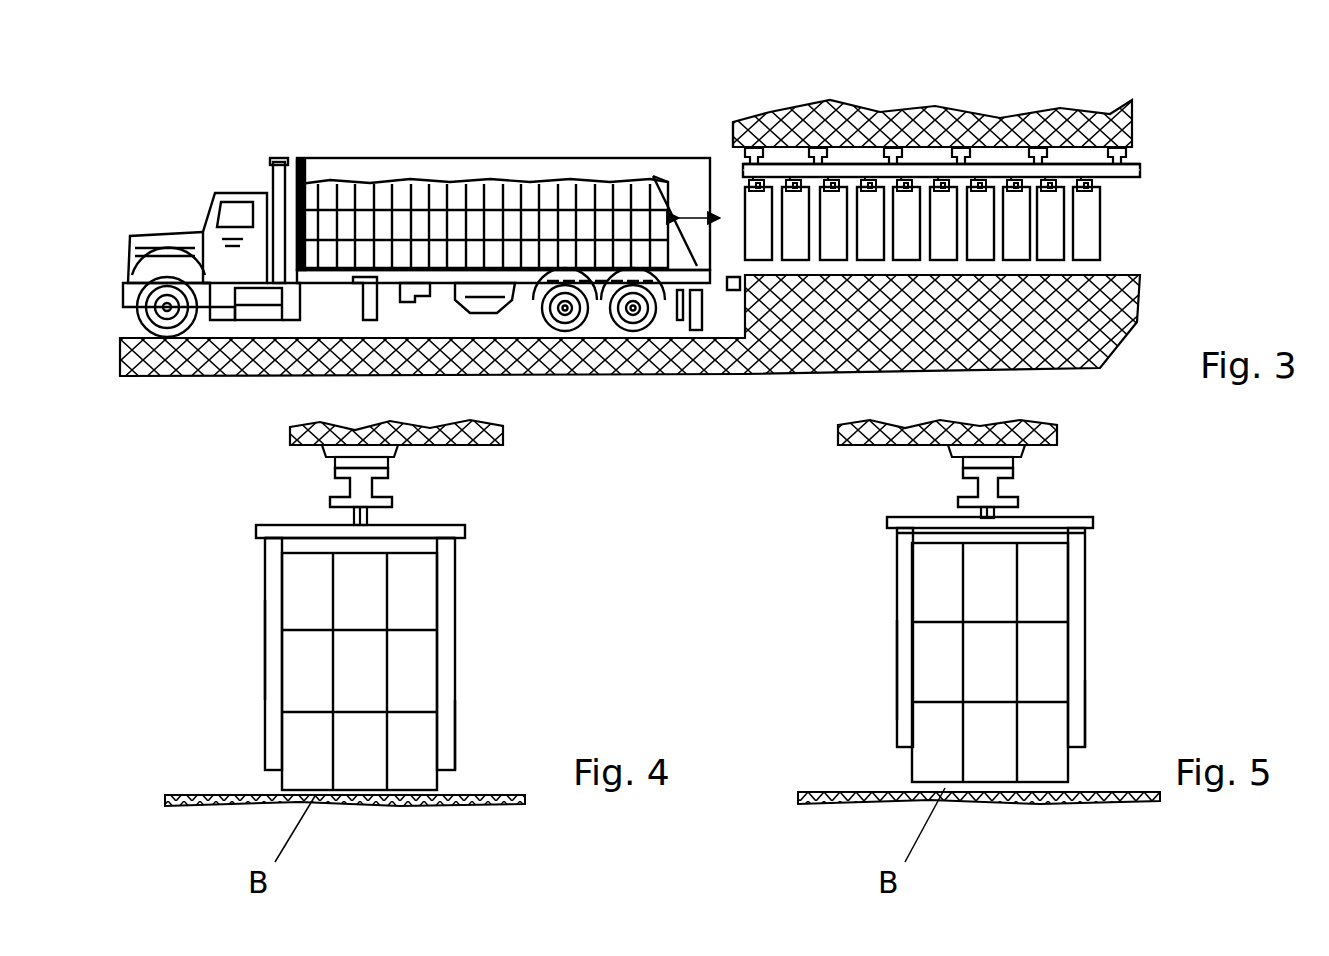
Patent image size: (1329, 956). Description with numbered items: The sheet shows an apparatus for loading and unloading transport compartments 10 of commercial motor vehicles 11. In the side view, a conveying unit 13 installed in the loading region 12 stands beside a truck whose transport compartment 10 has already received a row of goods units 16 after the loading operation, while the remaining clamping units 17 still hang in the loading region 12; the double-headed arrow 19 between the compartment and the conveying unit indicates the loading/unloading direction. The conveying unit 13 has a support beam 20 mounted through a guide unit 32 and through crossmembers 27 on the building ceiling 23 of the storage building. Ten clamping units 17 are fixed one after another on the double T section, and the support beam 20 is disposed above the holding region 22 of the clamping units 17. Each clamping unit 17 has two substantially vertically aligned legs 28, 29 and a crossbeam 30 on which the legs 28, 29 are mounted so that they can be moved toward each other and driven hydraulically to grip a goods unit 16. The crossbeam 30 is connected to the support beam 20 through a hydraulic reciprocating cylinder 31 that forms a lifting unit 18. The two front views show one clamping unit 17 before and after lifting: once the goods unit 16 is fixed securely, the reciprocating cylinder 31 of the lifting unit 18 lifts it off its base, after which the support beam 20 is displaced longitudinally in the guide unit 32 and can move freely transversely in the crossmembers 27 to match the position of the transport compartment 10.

In FIG. 3, the transport compartment 10 is at (415, 170).
In FIG. 3, the commercial motor vehicle 11 is at (262, 182).
In FIG. 3, the loading region 12 is at (1130, 266).
In FIG. 4, the loading region 12 is at (520, 782).
In FIG. 5, the loading region 12 is at (1135, 777).
In FIG. 3, the conveying unit 13 is at (1068, 158).
In FIG. 4, the conveying unit 13 is at (470, 555).
In FIG. 5, the conveying unit 13 is at (1093, 538).
In FIG. 3, the goods unit 16 is at (535, 195).
In FIG. 4, the goods unit 16 is at (410, 668).
In FIG. 5, the goods unit 16 is at (1040, 658).
In FIG. 3, the clamping unit 17 is at (738, 196).
In FIG. 4, the clamping unit 17 is at (458, 582).
In FIG. 5, the clamping unit 17 is at (1088, 560).
In FIG. 3, the lifting unit 18 is at (837, 175).
In FIG. 4, the lifting unit 18 is at (372, 517).
In FIG. 5, the lifting unit 18 is at (1002, 520).
In FIG. 3, the end wall 19 is at (697, 262).
In FIG. 3, the support beam 20 is at (1087, 168).
In FIG. 4, the support beam 20 is at (360, 490).
In FIG. 5, the support beam 20 is at (985, 490).
In FIG. 3, the holding region 22 is at (1106, 222).
In FIG. 4, the holding region 22 is at (278, 605).
In FIG. 5, the holding region 22 is at (908, 603).
In FIG. 3, the building ceiling 23 is at (930, 130).
In FIG. 4, the building ceiling 23 is at (445, 440).
In FIG. 5, the building ceiling 23 is at (1000, 432).
In FIG. 3, the crossmember 27 is at (737, 124).
In FIG. 4, the crossmember 27 is at (365, 452).
In FIG. 5, the crossmember 27 is at (985, 452).
In FIG. 4, the leg 28 is at (275, 663).
In FIG. 5, the leg 28 is at (905, 703).
In FIG. 3, the leg 29 is at (979, 222).
In FIG. 4, the leg 29 is at (452, 733).
In FIG. 5, the leg 29 is at (1071, 722).
In FIG. 3, the crossbeam 30 is at (1014, 188).
In FIG. 4, the crossbeam 30 is at (270, 532).
In FIG. 5, the crossbeam 30 is at (903, 528).
In FIG. 4, the hydraulic reciprocating cylinder 31 is at (352, 522).
In FIG. 5, the hydraulic reciprocating cylinder 31 is at (990, 514).
In FIG. 3, the guide unit 32 is at (758, 147).
In FIG. 4, the guide unit 32 is at (362, 463).
In FIG. 5, the guide unit 32 is at (995, 462).